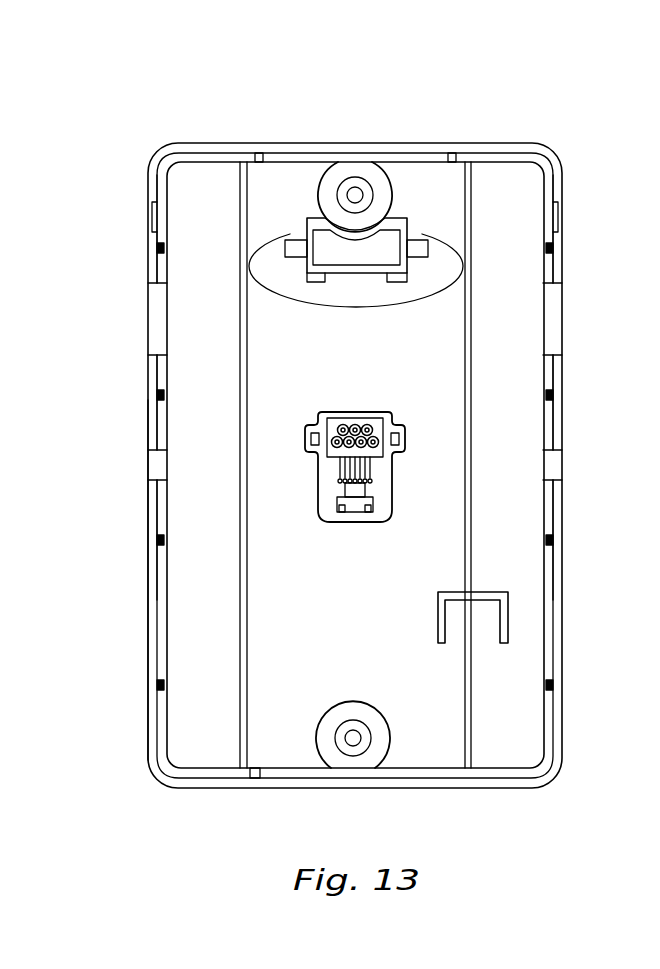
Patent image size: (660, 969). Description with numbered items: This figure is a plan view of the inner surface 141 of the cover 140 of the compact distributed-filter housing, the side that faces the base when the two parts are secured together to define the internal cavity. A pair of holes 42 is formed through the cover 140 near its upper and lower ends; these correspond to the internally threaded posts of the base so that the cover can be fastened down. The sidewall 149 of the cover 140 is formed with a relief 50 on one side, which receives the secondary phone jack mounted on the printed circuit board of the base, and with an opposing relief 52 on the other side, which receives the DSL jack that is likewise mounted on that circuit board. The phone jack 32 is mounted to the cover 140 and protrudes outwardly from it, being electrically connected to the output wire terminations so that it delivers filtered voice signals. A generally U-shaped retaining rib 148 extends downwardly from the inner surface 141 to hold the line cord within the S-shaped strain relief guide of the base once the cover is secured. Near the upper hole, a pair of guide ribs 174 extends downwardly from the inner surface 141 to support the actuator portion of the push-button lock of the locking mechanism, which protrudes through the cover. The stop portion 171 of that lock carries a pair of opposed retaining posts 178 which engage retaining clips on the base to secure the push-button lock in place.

The cover 140 is at (478, 790).
The inner surface 141 is at (318, 638).
The relief 50 is at (157, 322).
The relief 52 is at (552, 315).
The sidewall 149 is at (150, 627).
The holes 42 is at (356, 194).
The guide ribs 174 is at (443, 256).
The stop portion 171 is at (395, 228).
The retaining posts 178 is at (300, 243).
The phone jack 32 is at (318, 488).
The retaining rib 148 is at (488, 592).